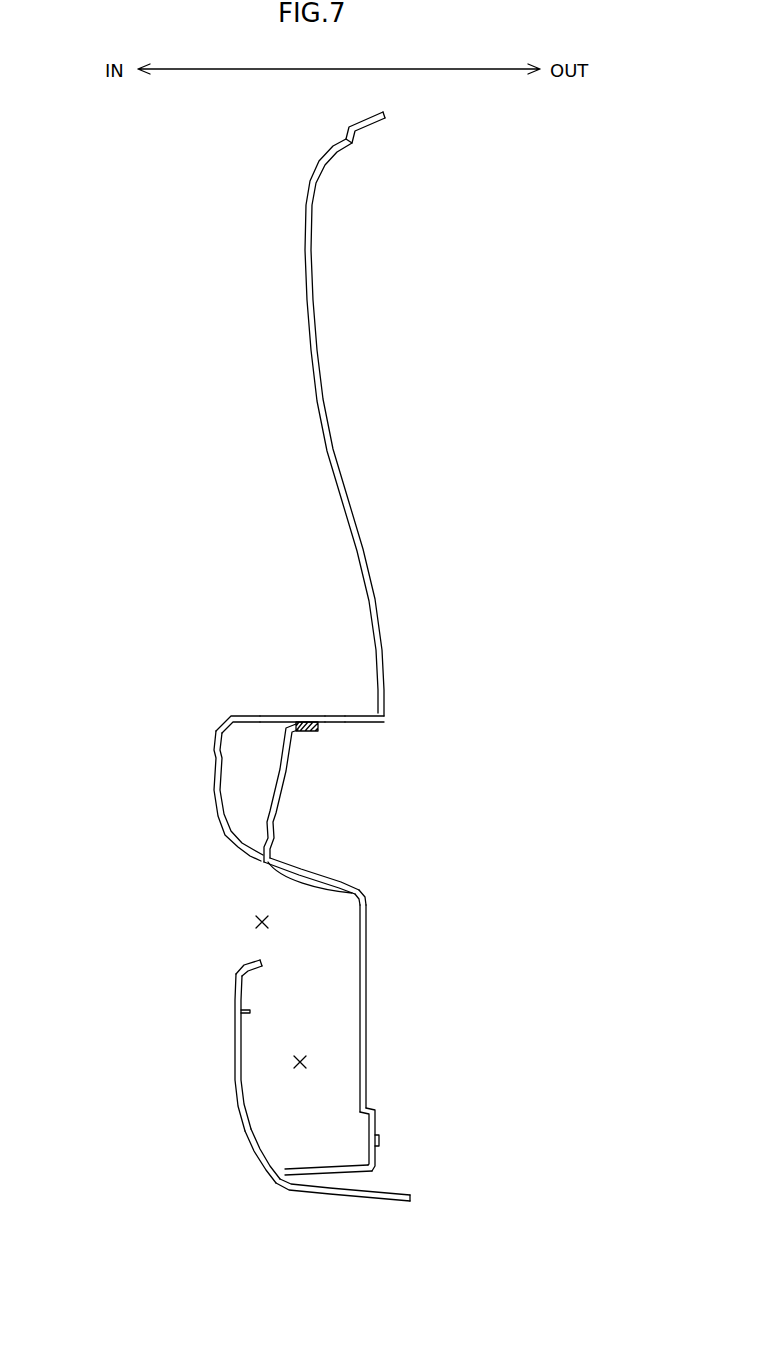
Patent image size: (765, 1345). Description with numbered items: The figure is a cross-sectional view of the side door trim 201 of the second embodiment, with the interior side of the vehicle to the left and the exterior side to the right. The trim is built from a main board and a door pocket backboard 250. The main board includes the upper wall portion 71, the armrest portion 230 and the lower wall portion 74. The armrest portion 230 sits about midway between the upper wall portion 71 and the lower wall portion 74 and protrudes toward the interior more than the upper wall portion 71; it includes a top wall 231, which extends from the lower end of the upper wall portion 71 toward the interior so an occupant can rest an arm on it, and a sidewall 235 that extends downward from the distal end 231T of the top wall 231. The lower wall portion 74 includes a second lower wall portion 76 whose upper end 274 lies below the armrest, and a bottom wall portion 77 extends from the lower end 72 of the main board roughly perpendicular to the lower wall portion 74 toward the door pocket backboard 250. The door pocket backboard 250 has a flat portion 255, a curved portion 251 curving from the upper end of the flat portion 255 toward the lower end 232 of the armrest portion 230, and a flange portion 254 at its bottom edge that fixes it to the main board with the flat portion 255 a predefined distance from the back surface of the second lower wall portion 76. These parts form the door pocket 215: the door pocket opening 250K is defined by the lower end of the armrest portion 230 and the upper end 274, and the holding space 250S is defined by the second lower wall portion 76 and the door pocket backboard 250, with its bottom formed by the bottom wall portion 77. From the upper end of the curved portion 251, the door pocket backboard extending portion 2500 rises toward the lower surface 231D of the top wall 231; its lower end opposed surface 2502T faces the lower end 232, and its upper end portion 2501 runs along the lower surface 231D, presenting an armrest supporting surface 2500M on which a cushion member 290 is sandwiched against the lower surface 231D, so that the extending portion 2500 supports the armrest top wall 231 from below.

The side door trim 201 is at (176, 249).
The upper wall portion 71 is at (312, 367).
The armrest portion 230 is at (146, 664).
The top wall 231 is at (283, 715).
The distal end 231T is at (228, 715).
The lower surface 231D is at (352, 723).
The cushion member 290 is at (335, 715).
The sidewall 235 is at (212, 775).
The lower end 232 is at (262, 857).
The door pocket backboard extending portion 2500 is at (327, 820).
The upper end portion 2501 is at (310, 731).
The armrest supporting surface 2500M is at (285, 773).
The curved portion 251 is at (290, 852).
The lower end opposed surface 2502T is at (362, 893).
The flat portion 255 is at (366, 1040).
The flange portion 254 is at (372, 1163).
The door pocket backboard 250 is at (397, 995).
The door pocket opening 250K is at (258, 921).
The holding space 250S is at (304, 1062).
The door pocket 215 is at (325, 1009).
The lower wall portion 74 is at (210, 1070).
The upper end 274 is at (249, 966).
The second lower wall portion 76 is at (238, 1105).
The lower end 72 is at (263, 1163).
The bottom wall portion 77 is at (330, 1180).